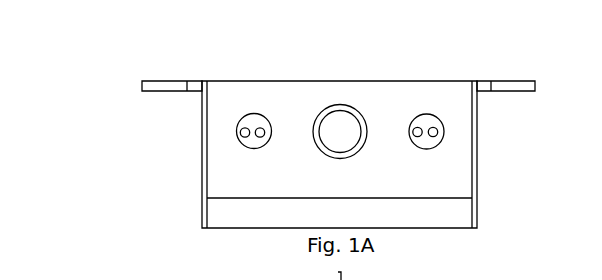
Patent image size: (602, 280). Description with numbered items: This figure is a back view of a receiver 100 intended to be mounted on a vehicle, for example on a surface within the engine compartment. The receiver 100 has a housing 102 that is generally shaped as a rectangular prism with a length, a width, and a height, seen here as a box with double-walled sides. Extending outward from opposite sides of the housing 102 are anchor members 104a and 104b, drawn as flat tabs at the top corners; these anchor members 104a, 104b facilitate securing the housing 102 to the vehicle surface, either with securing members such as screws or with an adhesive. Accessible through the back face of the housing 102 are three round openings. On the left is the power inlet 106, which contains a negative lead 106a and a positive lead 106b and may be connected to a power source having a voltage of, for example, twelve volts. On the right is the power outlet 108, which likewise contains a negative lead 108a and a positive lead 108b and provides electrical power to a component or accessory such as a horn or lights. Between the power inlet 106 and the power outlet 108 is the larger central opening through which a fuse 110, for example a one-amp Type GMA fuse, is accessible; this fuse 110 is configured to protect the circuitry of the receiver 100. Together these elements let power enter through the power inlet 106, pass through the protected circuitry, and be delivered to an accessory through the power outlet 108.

The receiver 100 is at (320, 62).
The housing 102 is at (452, 177).
The anchor member 104a is at (152, 95).
The anchor member 104b is at (517, 92).
The power inlet 106 is at (250, 147).
The negative lead 106a is at (241, 134).
The positive lead 106b is at (257, 137).
The power outlet 108 is at (431, 142).
The negative lead 108a is at (420, 129).
The positive lead 108b is at (437, 123).
The fuse 110 is at (338, 133).